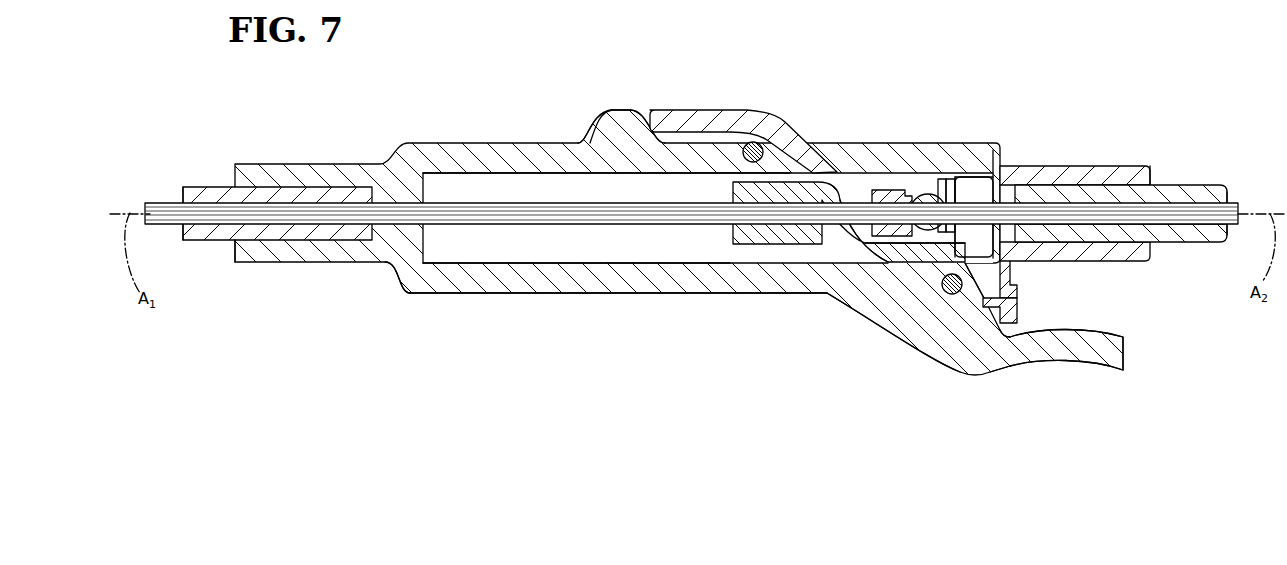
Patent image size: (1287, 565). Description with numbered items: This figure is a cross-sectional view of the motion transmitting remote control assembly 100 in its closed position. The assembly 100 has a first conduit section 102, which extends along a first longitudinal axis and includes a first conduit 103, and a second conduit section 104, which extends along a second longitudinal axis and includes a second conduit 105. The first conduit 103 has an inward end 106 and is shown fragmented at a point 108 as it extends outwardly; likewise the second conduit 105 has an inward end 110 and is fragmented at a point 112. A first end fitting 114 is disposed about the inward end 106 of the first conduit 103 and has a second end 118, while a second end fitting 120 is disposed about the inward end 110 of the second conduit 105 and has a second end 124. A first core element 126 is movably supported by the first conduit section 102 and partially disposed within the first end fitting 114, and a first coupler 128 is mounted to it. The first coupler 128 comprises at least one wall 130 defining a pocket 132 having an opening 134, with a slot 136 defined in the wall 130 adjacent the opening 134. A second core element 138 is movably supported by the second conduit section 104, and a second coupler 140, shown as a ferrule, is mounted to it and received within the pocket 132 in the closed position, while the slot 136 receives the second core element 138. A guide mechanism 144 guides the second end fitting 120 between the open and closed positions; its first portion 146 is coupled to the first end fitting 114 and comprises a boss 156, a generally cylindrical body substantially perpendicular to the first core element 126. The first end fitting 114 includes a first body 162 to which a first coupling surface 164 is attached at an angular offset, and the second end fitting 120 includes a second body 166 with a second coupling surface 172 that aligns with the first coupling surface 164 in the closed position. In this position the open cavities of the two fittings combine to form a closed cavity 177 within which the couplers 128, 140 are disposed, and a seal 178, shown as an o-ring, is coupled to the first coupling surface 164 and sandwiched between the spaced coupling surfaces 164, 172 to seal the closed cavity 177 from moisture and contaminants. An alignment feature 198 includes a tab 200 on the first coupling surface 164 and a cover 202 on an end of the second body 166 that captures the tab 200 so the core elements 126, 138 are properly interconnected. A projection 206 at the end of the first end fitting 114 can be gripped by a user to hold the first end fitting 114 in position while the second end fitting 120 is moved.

The motion transmitting remote control assembly 100 is at (1043, 70).
The first conduit section 102 is at (268, 163).
The first conduit 103 is at (205, 190).
The second conduit section 104 is at (1150, 264).
The second conduit 105 is at (1210, 186).
The inward end of the first conduit 106 is at (383, 245).
The fragmentation point of the first conduit 108 is at (183, 192).
The inward end of the second conduit 110 is at (1013, 247).
The fragmentation point of the second conduit 112 is at (1220, 243).
The first end fitting 114 is at (458, 163).
The second end of the first end fitting 118 is at (238, 245).
The second end fitting 120 is at (925, 165).
The second end of the second end fitting 124 is at (1152, 166).
The first core element 126 is at (452, 217).
The first coupler 128 is at (828, 247).
The wall 130 is at (835, 187).
The pocket 132 is at (877, 186).
The opening 134 is at (873, 243).
The slot 136 is at (965, 178).
The second core element 138 is at (1163, 227).
The second coupler 140 is at (955, 265).
The guide mechanism 144 is at (643, 105).
The first portion of the guide mechanism 146 is at (598, 110).
The boss 156 is at (590, 133).
The first body 162 is at (750, 283).
The first coupling surface 164 is at (940, 255).
The second body 166 is at (975, 178).
The second coupling surface 172 is at (1008, 165).
The closed cavity 177 is at (978, 190).
The seal 178 is at (753, 143).
The alignment feature 198 is at (942, 251).
The tab 200 is at (1030, 360).
The cover 202 is at (1010, 305).
The projection 206 is at (1093, 348).